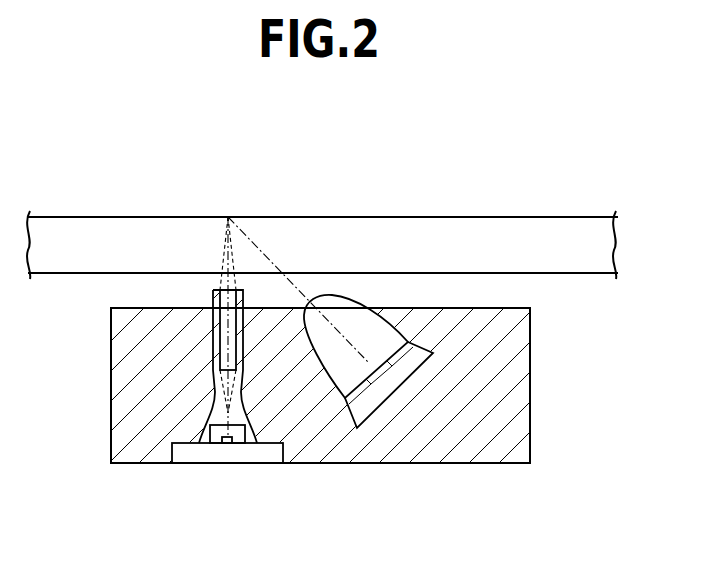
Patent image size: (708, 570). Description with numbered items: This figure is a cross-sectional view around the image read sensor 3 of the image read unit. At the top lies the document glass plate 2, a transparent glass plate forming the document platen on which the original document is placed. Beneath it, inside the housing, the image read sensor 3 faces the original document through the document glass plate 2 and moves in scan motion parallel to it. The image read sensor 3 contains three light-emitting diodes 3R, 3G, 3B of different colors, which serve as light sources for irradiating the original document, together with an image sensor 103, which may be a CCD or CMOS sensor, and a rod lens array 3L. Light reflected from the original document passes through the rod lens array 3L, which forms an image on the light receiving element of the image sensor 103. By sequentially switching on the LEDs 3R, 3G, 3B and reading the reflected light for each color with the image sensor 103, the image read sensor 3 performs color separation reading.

The document glass plate 2 is at (343, 228).
The image read sensor 3 is at (522, 390).
The rod lens array 3L is at (213, 349).
The image sensor 103 is at (226, 450).
The red light-emitting diode 3R is at (372, 388).
The green light-emitting diode 3G is at (385, 376).
The blue light-emitting diode 3B is at (398, 364).